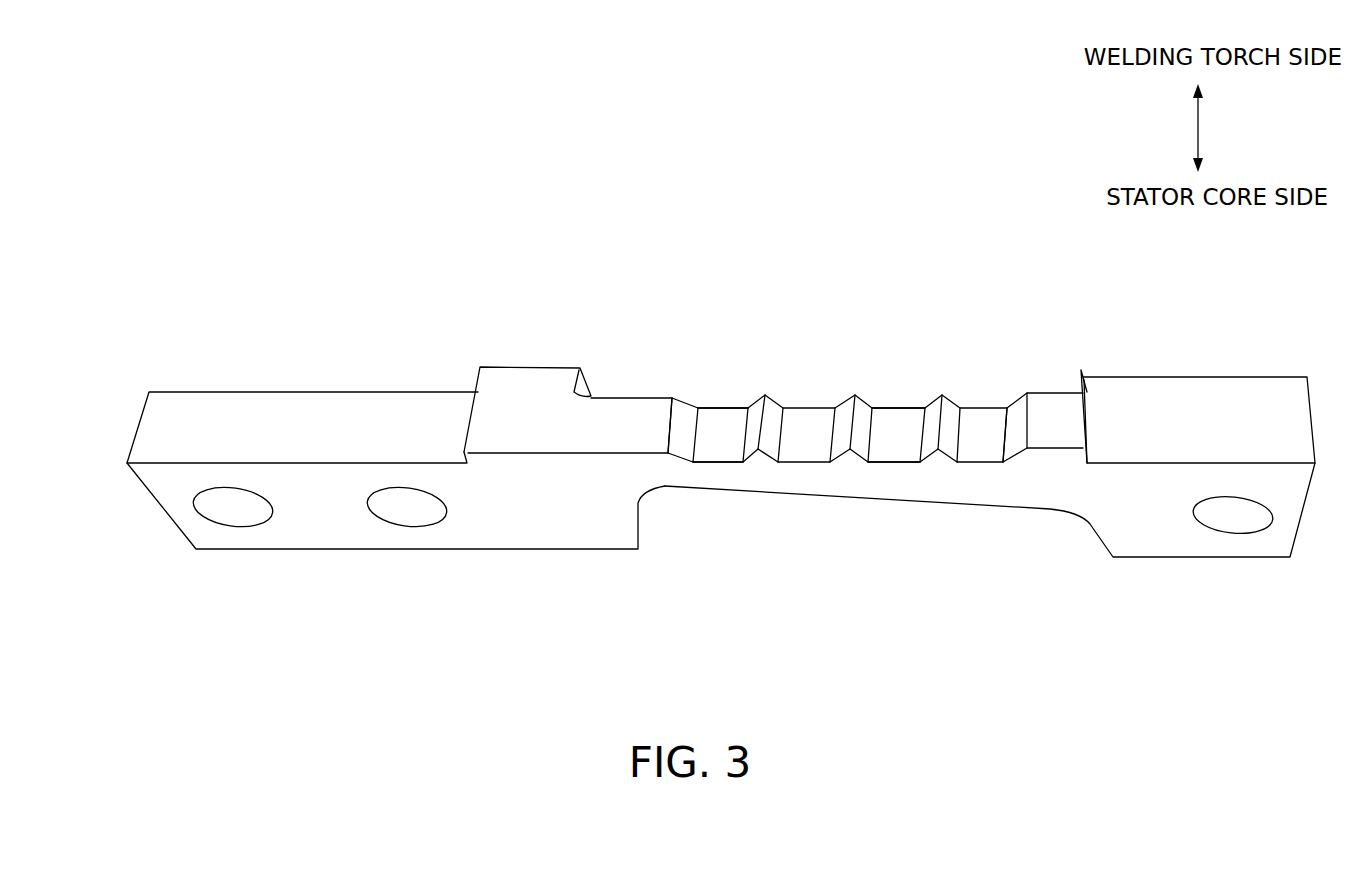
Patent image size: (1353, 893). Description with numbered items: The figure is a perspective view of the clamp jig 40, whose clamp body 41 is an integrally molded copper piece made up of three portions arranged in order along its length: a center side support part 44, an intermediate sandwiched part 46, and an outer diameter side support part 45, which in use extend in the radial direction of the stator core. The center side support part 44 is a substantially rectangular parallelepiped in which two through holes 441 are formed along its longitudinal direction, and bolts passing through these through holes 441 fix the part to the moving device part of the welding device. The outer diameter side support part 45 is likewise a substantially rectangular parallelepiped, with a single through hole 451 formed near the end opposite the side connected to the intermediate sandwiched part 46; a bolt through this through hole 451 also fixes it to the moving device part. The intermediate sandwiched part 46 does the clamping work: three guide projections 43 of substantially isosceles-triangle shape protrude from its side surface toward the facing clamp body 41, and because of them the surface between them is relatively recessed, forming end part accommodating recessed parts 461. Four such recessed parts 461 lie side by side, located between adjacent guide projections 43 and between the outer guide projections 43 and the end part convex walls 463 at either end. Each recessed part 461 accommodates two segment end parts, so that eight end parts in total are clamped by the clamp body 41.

The clamp jig 40 is at (194, 259).
The clamp body 41 is at (901, 507).
The guide projection 43 is at (942, 397).
The center side support part 44 is at (312, 535).
The through hole 441 is at (225, 510).
The outer diameter side support part 45 is at (1200, 535).
The through hole 451 is at (1243, 503).
The intermediate sandwiched part 46 is at (667, 500).
The end part accommodating recessed part 461 is at (808, 448).
The end part convex wall 463 is at (684, 414).